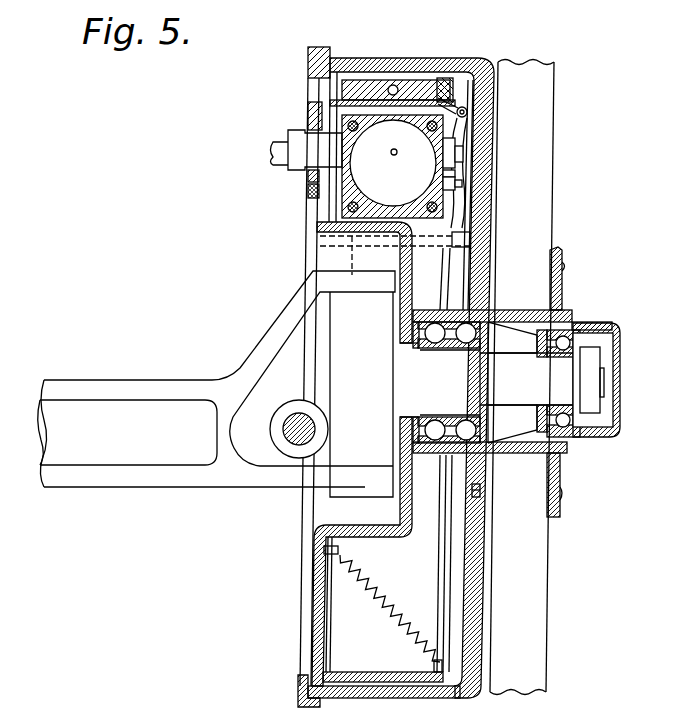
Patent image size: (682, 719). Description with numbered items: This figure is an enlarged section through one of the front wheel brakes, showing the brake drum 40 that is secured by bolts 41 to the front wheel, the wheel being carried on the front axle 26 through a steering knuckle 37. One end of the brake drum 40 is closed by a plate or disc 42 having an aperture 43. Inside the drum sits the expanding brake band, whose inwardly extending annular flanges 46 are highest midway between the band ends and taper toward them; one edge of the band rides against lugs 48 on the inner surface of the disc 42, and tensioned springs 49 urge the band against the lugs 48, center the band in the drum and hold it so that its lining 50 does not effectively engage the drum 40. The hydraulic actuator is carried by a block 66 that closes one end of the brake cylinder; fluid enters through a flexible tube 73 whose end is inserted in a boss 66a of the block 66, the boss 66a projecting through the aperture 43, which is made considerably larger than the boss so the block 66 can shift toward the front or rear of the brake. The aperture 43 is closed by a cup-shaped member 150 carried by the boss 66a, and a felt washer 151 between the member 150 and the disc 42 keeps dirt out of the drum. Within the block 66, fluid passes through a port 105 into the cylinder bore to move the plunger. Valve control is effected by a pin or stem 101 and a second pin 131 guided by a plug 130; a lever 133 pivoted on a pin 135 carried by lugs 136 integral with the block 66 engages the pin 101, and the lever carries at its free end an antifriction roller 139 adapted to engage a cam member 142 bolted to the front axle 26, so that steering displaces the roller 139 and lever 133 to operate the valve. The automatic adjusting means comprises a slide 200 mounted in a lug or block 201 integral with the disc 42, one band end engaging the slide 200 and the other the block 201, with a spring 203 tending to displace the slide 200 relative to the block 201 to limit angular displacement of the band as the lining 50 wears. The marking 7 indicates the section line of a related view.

The section line of Fig. 7 is at (408, 42).
The front axle 26 is at (149, 383).
The steering knuckle 37 is at (348, 437).
The brake drum 40 is at (473, 68).
The bolts 41 is at (565, 268).
The plate or disc 42 is at (310, 54).
The aperture 43 is at (309, 114).
The annular flanges 46 is at (326, 661).
The lugs 48 is at (312, 648).
The tensioned springs 49 is at (384, 593).
The lining 50 is at (378, 686).
The block 66 is at (343, 199).
The boss 66a is at (292, 158).
The flexible tube 73 is at (270, 146).
The pin or stem 101 is at (458, 153).
The port 105 is at (395, 155).
The plug 130 is at (453, 173).
The pin 131 is at (456, 181).
The lever 133 is at (468, 129).
The pin 135 is at (466, 109).
The lugs 136 is at (464, 76).
The antifriction roller 139 is at (470, 238).
The cam member 142 is at (432, 238).
The cup-shaped member 150 is at (310, 180).
The washer 151 is at (310, 192).
The slide 200 is at (352, 80).
The lug or block 201 is at (443, 78).
The spring 203 is at (394, 85).